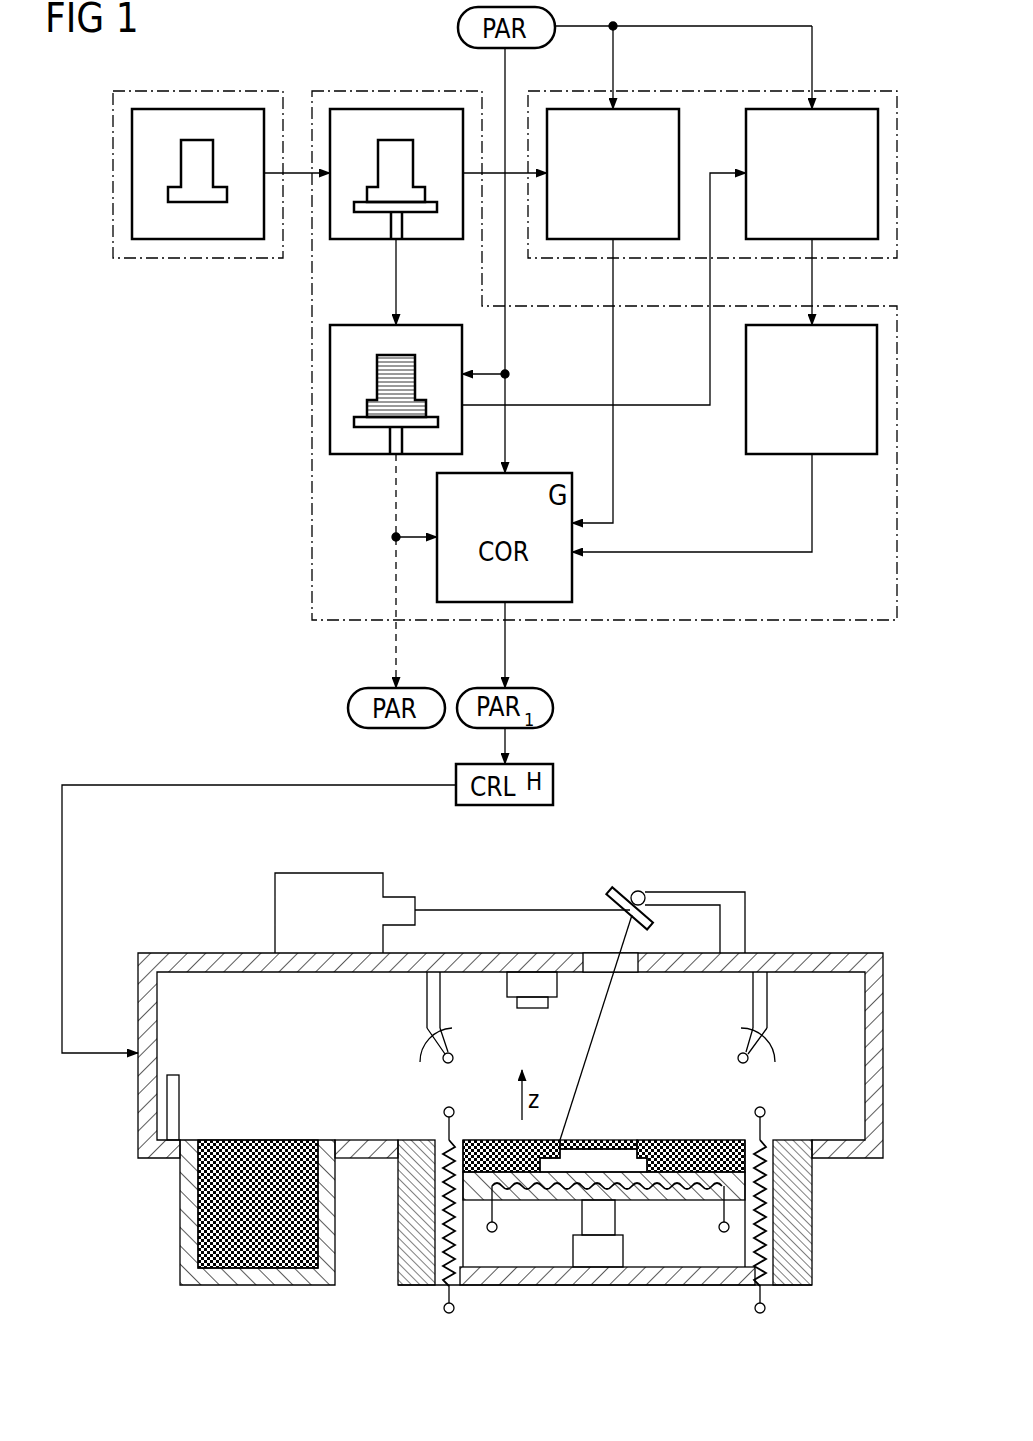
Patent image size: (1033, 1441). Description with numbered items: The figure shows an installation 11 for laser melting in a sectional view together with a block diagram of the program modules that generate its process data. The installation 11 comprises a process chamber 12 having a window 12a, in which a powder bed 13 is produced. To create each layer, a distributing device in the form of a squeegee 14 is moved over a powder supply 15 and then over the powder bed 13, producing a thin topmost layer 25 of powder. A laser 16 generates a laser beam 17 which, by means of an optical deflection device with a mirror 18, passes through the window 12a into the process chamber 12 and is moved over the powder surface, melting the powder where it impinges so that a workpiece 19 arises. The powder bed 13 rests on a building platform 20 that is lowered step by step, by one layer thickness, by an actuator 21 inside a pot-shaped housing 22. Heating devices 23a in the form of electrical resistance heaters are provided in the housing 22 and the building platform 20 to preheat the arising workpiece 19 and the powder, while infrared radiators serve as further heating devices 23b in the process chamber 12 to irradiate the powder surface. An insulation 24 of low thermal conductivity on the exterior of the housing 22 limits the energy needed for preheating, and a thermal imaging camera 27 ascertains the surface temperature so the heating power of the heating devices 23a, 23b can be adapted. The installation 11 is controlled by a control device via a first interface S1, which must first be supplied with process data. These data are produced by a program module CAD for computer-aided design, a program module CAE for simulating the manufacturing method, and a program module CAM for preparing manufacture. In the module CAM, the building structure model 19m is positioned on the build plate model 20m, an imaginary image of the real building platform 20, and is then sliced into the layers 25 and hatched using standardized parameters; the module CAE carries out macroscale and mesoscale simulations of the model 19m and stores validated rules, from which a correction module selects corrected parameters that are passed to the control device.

The program module for computer-aided design CAD is at (237, 91).
The program module for preparing the manufacturing method CAM is at (351, 91).
The program module for simulating the manufacturing method CAE is at (862, 91).
The building structure model 19m is at (190, 150).
The build plate model 20m is at (376, 210).
The topmost layer 25 is at (385, 378).
The first interface S1 is at (62, 812).
The installation for laser melting 11 is at (832, 925).
The process chamber 12 is at (883, 1050).
The window 12a is at (627, 968).
The powder bed 13 is at (697, 1160).
The squeegee 14 is at (175, 1075).
The powder supply 15 is at (270, 1148).
The laser 16 is at (325, 873).
The laser beam 17 is at (582, 1062).
The mirror 18 is at (622, 887).
The workpiece 19 is at (597, 1162).
The building platform 20 is at (470, 1185).
The actuator 21 is at (597, 1258).
The pot-shaped housing 22 is at (705, 1277).
The heating devices 23a is at (722, 1210).
The heating devices 23b is at (427, 1000).
The insulation 24 is at (417, 1278).
The thermal imaging camera 27 is at (533, 982).